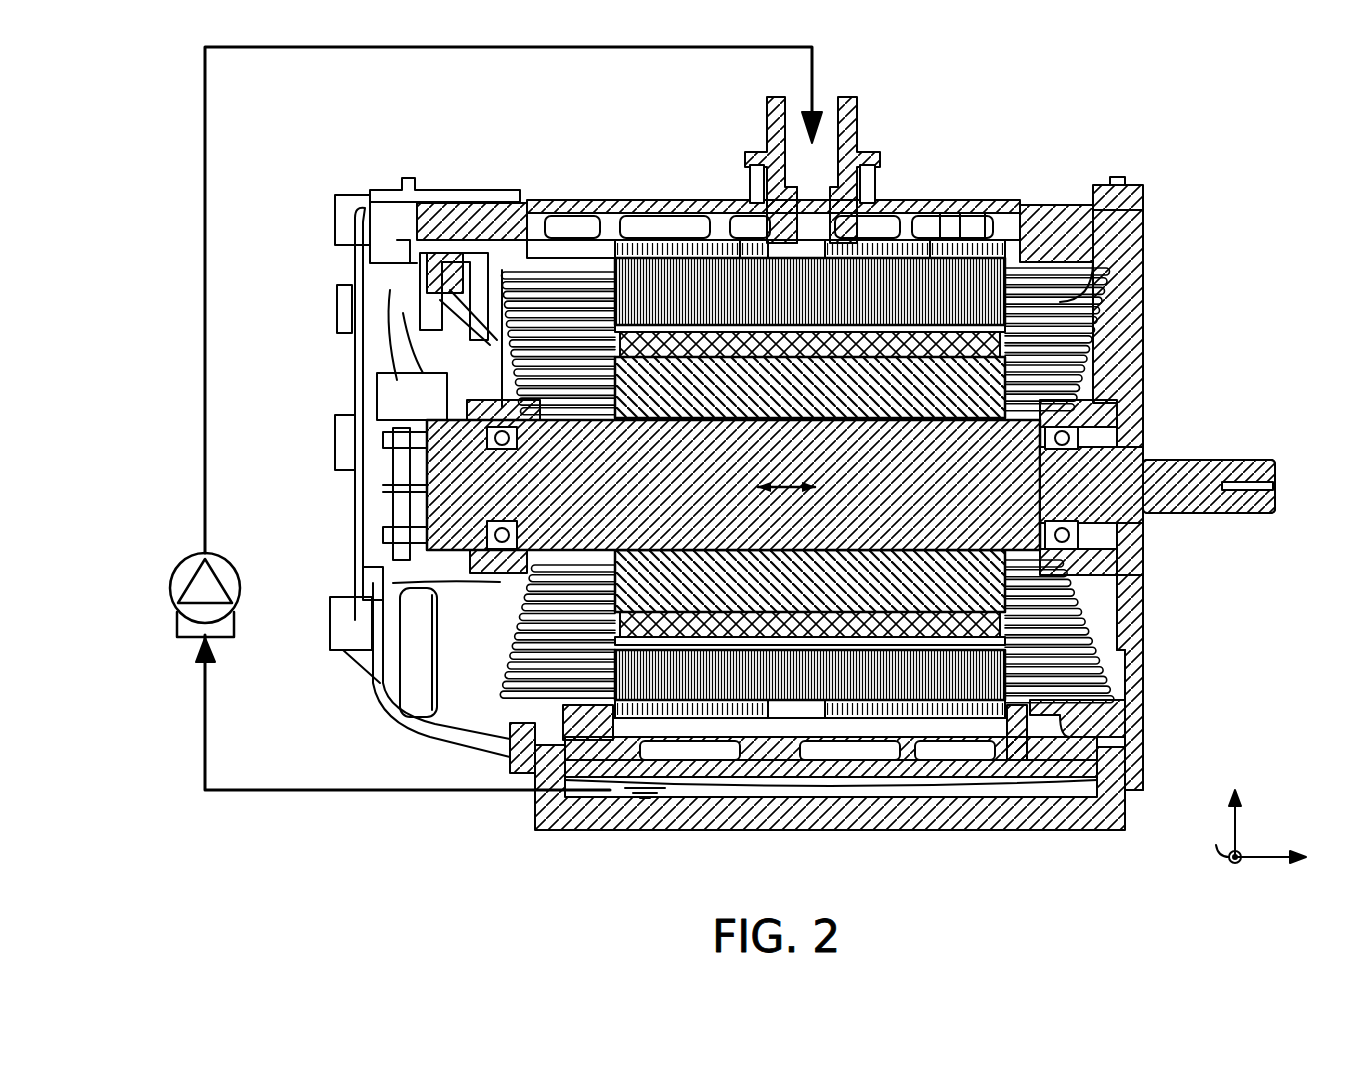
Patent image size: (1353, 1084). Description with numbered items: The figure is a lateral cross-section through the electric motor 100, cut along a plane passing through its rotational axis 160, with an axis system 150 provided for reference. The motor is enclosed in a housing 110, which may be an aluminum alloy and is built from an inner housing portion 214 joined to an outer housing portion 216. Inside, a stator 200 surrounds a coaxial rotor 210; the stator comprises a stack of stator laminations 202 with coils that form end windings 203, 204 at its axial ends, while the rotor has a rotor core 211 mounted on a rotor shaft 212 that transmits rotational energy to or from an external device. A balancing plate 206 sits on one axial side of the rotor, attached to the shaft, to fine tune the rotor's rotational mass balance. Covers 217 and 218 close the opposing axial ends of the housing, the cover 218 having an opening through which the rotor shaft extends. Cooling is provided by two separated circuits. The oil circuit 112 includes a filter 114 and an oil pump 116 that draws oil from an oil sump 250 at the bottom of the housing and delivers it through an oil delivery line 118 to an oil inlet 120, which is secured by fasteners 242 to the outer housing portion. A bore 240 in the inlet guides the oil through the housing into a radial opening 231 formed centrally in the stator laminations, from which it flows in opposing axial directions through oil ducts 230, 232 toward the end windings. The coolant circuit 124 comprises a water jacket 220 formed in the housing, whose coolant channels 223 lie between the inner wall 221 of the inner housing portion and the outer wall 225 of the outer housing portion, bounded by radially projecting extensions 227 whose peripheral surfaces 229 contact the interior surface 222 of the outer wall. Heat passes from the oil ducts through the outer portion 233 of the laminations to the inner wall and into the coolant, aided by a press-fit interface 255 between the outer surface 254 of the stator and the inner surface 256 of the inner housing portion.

The electric motor 100 is at (1262, 140).
The housing 110 is at (540, 128).
The oil circuit 112 is at (442, 418).
The filter 114 is at (186, 637).
The oil pump 116 is at (172, 590).
The oil delivery line 118 is at (205, 388).
The oil inlet 120 is at (778, 132).
The coolant circuit 124 is at (1052, 98).
The axis system 150 is at (1286, 824).
The rotational axis 160 is at (786, 462).
The stator 200 is at (823, 488).
The stator laminations 202 is at (880, 274).
The end winding 203 is at (513, 390).
The end winding 204 is at (1112, 355).
The balancing plate 206 is at (590, 622).
The rotor 210 is at (810, 443).
The rotor core 211 is at (870, 352).
The rotor shaft 212 is at (1207, 460).
The inner housing portion 214 is at (545, 220).
The outer housing portion 216 is at (593, 218).
The cover 217 is at (385, 705).
The cover 218 is at (1140, 685).
The water jacket 220 is at (990, 140).
The inner wall 221 is at (942, 233).
The interior surface 222 is at (993, 230).
The coolant channels 223 is at (961, 220).
The outer wall 225 is at (938, 207).
The extensions 227 is at (705, 212).
The peripheral surfaces 229 is at (710, 213).
The oil duct 230 is at (742, 255).
The radial opening 231 is at (817, 243).
The oil duct 232 is at (930, 250).
The outer portion 233 is at (706, 323).
The bore 240 is at (833, 100).
The fasteners 242 is at (765, 152).
The oil sump 250 is at (628, 838).
The outer surface 254 is at (626, 238).
The interface 255 is at (576, 228).
The inner surface 256 is at (670, 242).